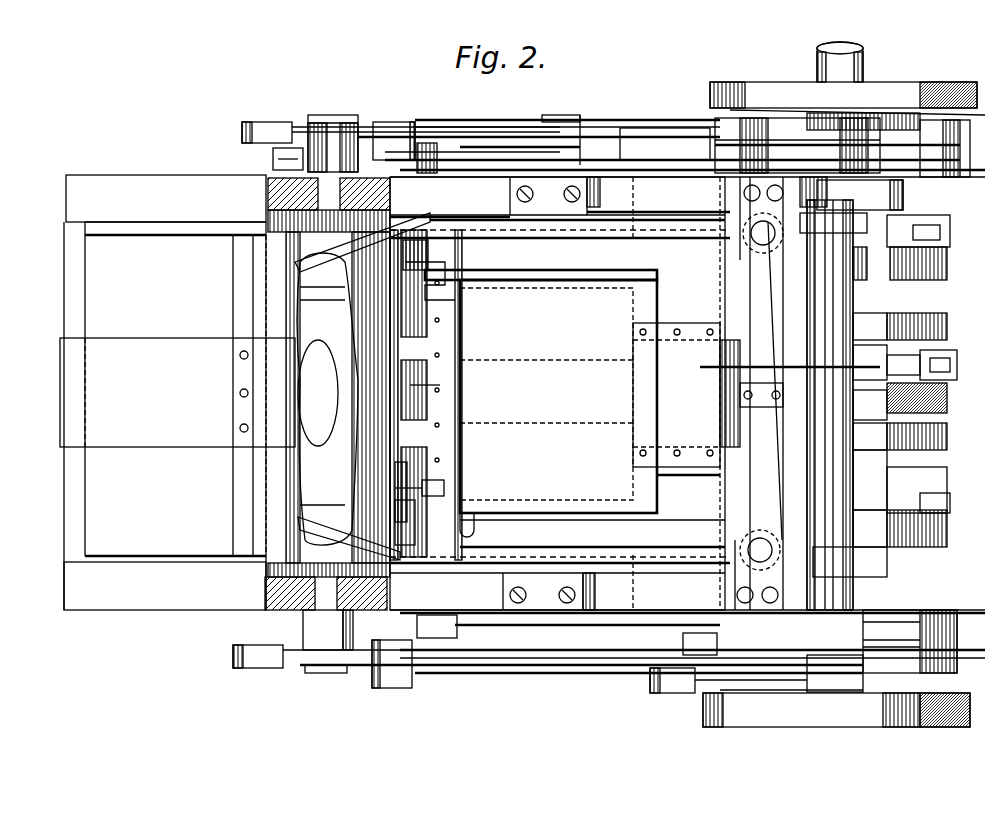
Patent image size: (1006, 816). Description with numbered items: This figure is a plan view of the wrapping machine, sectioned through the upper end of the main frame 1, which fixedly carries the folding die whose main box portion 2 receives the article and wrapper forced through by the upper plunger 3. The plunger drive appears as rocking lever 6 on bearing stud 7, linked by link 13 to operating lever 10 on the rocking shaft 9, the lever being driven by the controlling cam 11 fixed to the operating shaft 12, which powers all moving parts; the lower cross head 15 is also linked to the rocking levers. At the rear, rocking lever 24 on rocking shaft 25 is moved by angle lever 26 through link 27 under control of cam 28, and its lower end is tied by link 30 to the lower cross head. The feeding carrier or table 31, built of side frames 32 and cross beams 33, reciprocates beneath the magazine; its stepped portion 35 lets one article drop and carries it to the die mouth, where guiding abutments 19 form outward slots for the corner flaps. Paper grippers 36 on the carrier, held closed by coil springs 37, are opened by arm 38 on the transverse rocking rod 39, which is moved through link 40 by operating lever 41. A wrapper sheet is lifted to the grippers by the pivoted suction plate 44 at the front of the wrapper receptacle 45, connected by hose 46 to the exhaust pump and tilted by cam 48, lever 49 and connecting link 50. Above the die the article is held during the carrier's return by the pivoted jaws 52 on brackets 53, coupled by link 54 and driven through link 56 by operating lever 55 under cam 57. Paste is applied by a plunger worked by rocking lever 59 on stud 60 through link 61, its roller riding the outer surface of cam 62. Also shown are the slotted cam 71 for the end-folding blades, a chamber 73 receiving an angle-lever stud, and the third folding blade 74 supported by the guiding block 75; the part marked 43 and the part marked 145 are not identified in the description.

The main frame 1 is at (640, 606).
The main box portion 2 is at (300, 287).
The upper or forcing plunger 3 is at (300, 505).
The rocking lever 6 is at (290, 125).
The bearing stud 7 is at (325, 120).
The rocking shaft 9 is at (700, 118).
The operating lever 10 is at (462, 665).
The controlling cam 11 is at (950, 95).
The operating shaft 12 is at (860, 62).
The link 13 is at (392, 122).
The lower cross head 15 is at (418, 675).
The guiding abutment 19 is at (318, 470).
The rocking lever 24 is at (880, 660).
The rocking shaft 25 is at (860, 545).
The angle lever 26 is at (650, 672).
The link 27 is at (668, 695).
The cam 28 is at (842, 730).
The link 30 is at (535, 628).
The feeding carrier or table 31 is at (110, 352).
The side frame 32 is at (300, 545).
The cross beam 33 is at (67, 290).
The stepped portion 35 is at (298, 402).
The paper gripper 36 is at (418, 485).
The coil spring 37 is at (440, 485).
The arm 38 is at (387, 506).
The transverse rocking rod 39 is at (412, 385).
The link 40 is at (700, 470).
The operating lever 41 is at (935, 498).
The bearing 43 is at (900, 528).
The pivoted suction plate 44 is at (460, 352).
The wrapper receptacle 45 is at (560, 513).
The hose 46 is at (480, 518).
The cam 48 is at (920, 270).
The lever 49 is at (900, 257).
The connecting link 50 is at (700, 258).
The jaw 52 is at (298, 258).
The bracket 53 is at (775, 545).
The link 54 is at (763, 407).
The operating lever 55 is at (917, 398).
The link 56 is at (420, 300).
The cam 57 is at (870, 405).
The rocking lever 59 is at (640, 130).
The stud 60 is at (548, 118).
The link 61 is at (273, 158).
The cam 62 is at (958, 114).
The slotted cam 71 is at (900, 326).
The chamber 73 is at (901, 481).
The third folding blade 74 is at (512, 378).
The guiding block 75 is at (718, 350).
The plate 145 is at (655, 418).